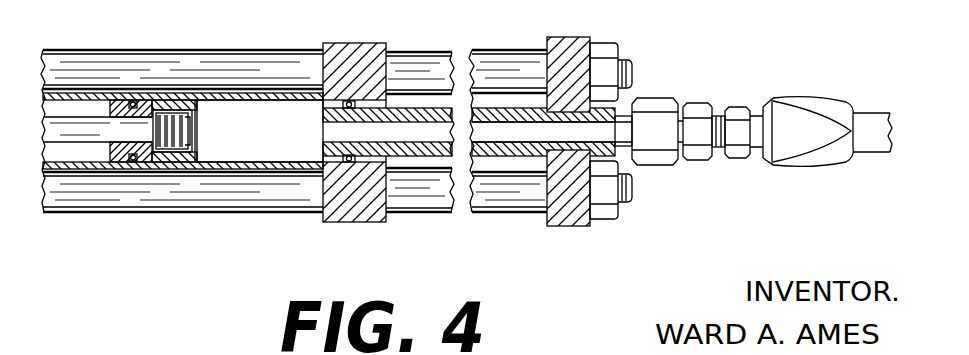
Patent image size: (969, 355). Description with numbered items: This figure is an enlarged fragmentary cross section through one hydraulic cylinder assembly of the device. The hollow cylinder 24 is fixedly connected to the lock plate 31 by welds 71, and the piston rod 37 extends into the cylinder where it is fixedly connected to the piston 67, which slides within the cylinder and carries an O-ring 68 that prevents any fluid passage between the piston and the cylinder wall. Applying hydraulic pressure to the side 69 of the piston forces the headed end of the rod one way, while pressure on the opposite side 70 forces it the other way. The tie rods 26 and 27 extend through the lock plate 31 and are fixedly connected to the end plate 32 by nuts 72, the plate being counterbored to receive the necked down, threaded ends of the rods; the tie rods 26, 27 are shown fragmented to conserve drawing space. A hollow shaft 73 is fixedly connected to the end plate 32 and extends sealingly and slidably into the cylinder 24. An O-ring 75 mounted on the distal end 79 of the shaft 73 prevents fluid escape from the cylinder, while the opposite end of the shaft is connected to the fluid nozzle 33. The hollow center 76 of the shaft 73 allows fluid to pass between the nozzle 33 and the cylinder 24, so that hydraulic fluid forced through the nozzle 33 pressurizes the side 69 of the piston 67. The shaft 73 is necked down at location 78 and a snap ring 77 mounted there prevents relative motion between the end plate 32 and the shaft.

The hollow cylinder 24 is at (157, 112).
The tie rod 26 is at (238, 50).
The tie rod 27 is at (247, 214).
The lock plate 31 is at (340, 43).
The end plate 32 is at (565, 228).
The fluid nozzle 33 is at (733, 94).
The piston rod 37 is at (80, 117).
The piston 67 is at (168, 172).
The O-ring 68 is at (140, 172).
The side of piston 69 is at (228, 172).
The side of piston 70 is at (68, 172).
The weld 71 is at (319, 90).
The nut 72 is at (615, 44).
The hollow shaft 73 is at (423, 110).
The O-ring 75 is at (345, 168).
The hollow center 76 is at (517, 133).
The snap ring 77 is at (594, 113).
The necked down location 78 is at (549, 109).
The distal end 79 is at (320, 150).